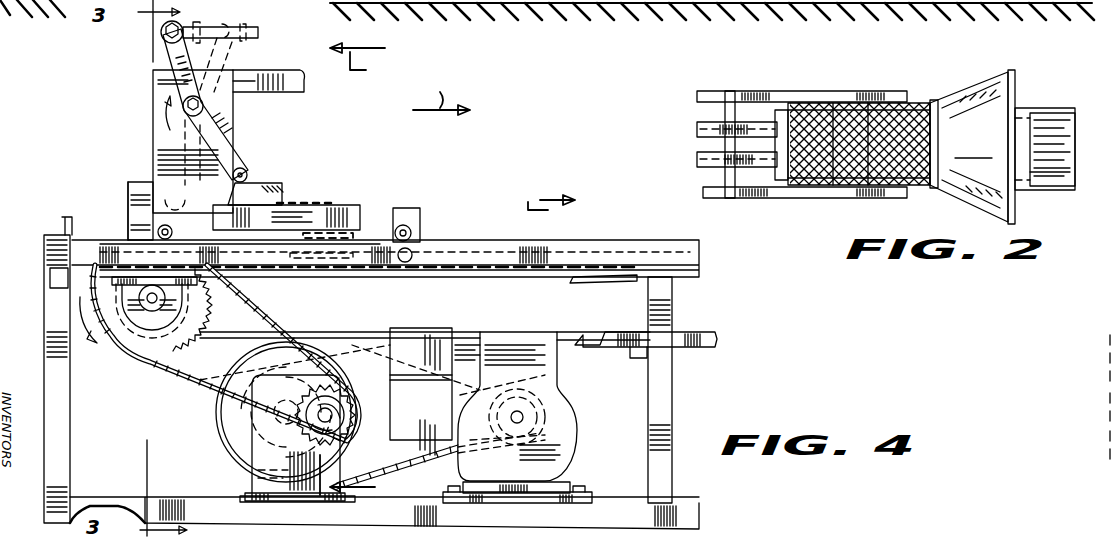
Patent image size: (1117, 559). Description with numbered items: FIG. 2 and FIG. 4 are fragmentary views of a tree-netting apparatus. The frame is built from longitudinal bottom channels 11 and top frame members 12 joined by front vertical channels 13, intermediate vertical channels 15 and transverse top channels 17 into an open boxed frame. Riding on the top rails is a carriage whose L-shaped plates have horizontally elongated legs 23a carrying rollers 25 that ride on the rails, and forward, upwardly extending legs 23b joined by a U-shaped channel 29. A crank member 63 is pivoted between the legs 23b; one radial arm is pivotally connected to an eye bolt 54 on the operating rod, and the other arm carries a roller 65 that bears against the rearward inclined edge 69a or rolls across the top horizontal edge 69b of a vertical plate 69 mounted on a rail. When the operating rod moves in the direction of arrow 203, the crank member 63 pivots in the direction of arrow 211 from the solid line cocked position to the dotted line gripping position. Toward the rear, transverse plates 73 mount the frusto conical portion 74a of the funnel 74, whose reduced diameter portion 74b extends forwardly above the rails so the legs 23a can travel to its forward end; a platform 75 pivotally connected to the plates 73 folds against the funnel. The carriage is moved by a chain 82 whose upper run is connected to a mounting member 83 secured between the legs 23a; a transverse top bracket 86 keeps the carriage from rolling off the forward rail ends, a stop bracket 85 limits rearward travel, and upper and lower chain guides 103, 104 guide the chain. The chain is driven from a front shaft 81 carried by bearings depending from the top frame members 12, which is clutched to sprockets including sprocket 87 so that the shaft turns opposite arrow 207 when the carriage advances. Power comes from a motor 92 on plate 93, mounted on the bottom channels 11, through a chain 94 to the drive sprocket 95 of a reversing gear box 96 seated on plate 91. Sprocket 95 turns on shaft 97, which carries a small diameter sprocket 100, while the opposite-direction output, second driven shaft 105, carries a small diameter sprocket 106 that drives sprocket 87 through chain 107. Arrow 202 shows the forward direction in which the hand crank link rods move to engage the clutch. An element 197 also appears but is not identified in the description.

In FIG. 4, the bottom channels 11 is at (705, 520).
In FIG. 2, the top frame members 12 is at (795, 92).
In FIG. 4, the top frame members 12 is at (640, 255).
In FIG. 4, the front vertical channels 13 is at (68, 488).
In FIG. 4, the intermediate vertical channels 15 is at (672, 312).
In FIG. 4, the transverse top channels 17 is at (50, 278).
In FIG. 4, the horizontally elongated legs 23a is at (393, 210).
In FIG. 4, the forward upwardly extending leg 23b is at (153, 80).
In FIG. 4, the roller 25 is at (411, 229).
In FIG. 4, the U-shaped channel 29 is at (300, 88).
In FIG. 4, the eye bolt 54 is at (258, 36).
In FIG. 4, the crank member 63 is at (232, 136).
In FIG. 4, the roller 65 is at (262, 183).
In FIG. 4, the vertical plate 69 is at (128, 196).
In FIG. 4, the rearward inclined edge 69a is at (272, 205).
In FIG. 4, the top horizontal edge 69b is at (140, 182).
In FIG. 2, the transverse plates 73 is at (1030, 108).
In FIG. 2, the funnel 74 is at (968, 98).
In FIG. 2, the frusto conical portion 74a is at (973, 147).
In FIG. 2, the reduced diameter portion 74b is at (777, 112).
In FIG. 2, the platform 75 is at (1050, 175).
In FIG. 4, the front shaft 81 is at (190, 298).
In FIG. 4, the chain 82 is at (352, 332).
In FIG. 4, the mounting member 83 is at (345, 270).
In FIG. 2, the stop bracket 85 is at (840, 100).
In FIG. 4, the transverse top bracket 86 is at (65, 218).
In FIG. 4, the sprocket 87 is at (135, 355).
In FIG. 4, the plate 91 is at (355, 502).
In FIG. 4, the motor 92 is at (578, 458).
In FIG. 4, the plate 93 is at (560, 520).
In FIG. 4, the chain 94 is at (458, 455).
In FIG. 4, the drive sprocket 95 is at (240, 450).
In FIG. 4, the reversing gear box 96 is at (432, 464).
In FIG. 4, the shaft 97 is at (250, 428).
In FIG. 4, the small diameter sprocket 100 is at (298, 390).
In FIG. 4, the upper chain guide 103 is at (620, 283).
In FIG. 4, the lower chain guide 104 is at (695, 349).
In FIG. 4, the second driven shaft 105 is at (340, 435).
In FIG. 4, the small diameter sprocket 106 is at (340, 402).
In FIG. 4, the chain 107 is at (172, 378).
In FIG. 4, the guide 197 is at (318, 210).
In FIG. 4, the arrow 202 is at (362, 63).
In FIG. 4, the arrow 203 is at (507, 149).
In FIG. 4, the arrow 207 is at (82, 322).
In FIG. 4, the arrow 211 is at (165, 118).